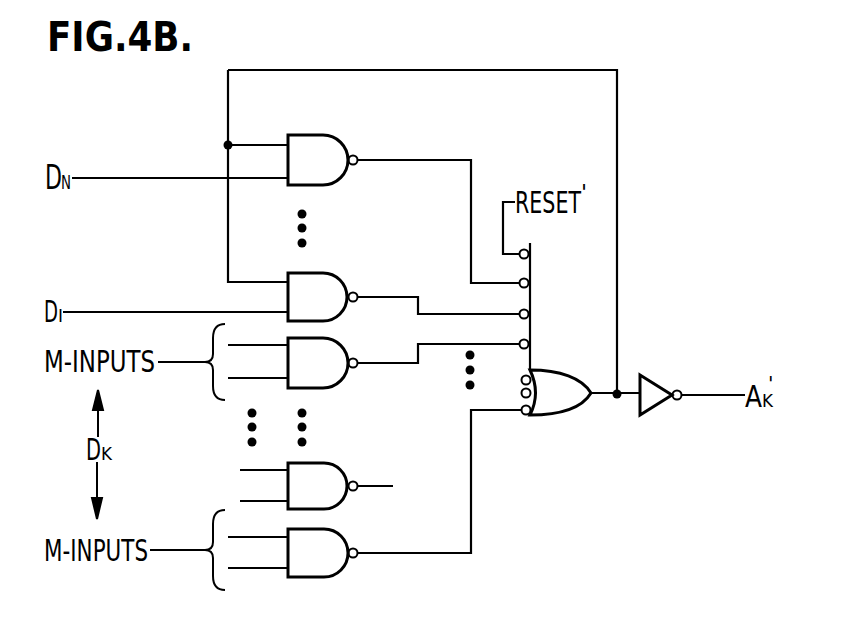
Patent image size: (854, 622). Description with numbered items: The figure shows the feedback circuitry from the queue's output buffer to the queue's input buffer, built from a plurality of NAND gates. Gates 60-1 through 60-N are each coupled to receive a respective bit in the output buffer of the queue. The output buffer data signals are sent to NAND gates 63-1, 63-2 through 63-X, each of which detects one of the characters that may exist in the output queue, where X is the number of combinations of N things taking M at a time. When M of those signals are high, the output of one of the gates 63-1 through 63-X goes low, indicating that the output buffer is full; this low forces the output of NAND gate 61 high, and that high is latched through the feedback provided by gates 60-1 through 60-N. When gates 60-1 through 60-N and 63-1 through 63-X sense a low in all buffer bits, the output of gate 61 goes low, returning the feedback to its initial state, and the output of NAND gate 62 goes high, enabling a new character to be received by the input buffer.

The NAND gate 60-N is at (338, 178).
The NAND gate 60-1 is at (334, 314).
The NAND gate 63-X is at (338, 380).
The NAND gate 63-2 is at (335, 502).
The NAND gate 63-1 is at (333, 570).
The NAND gate 61 is at (564, 407).
The NAND gate 62 is at (654, 407).